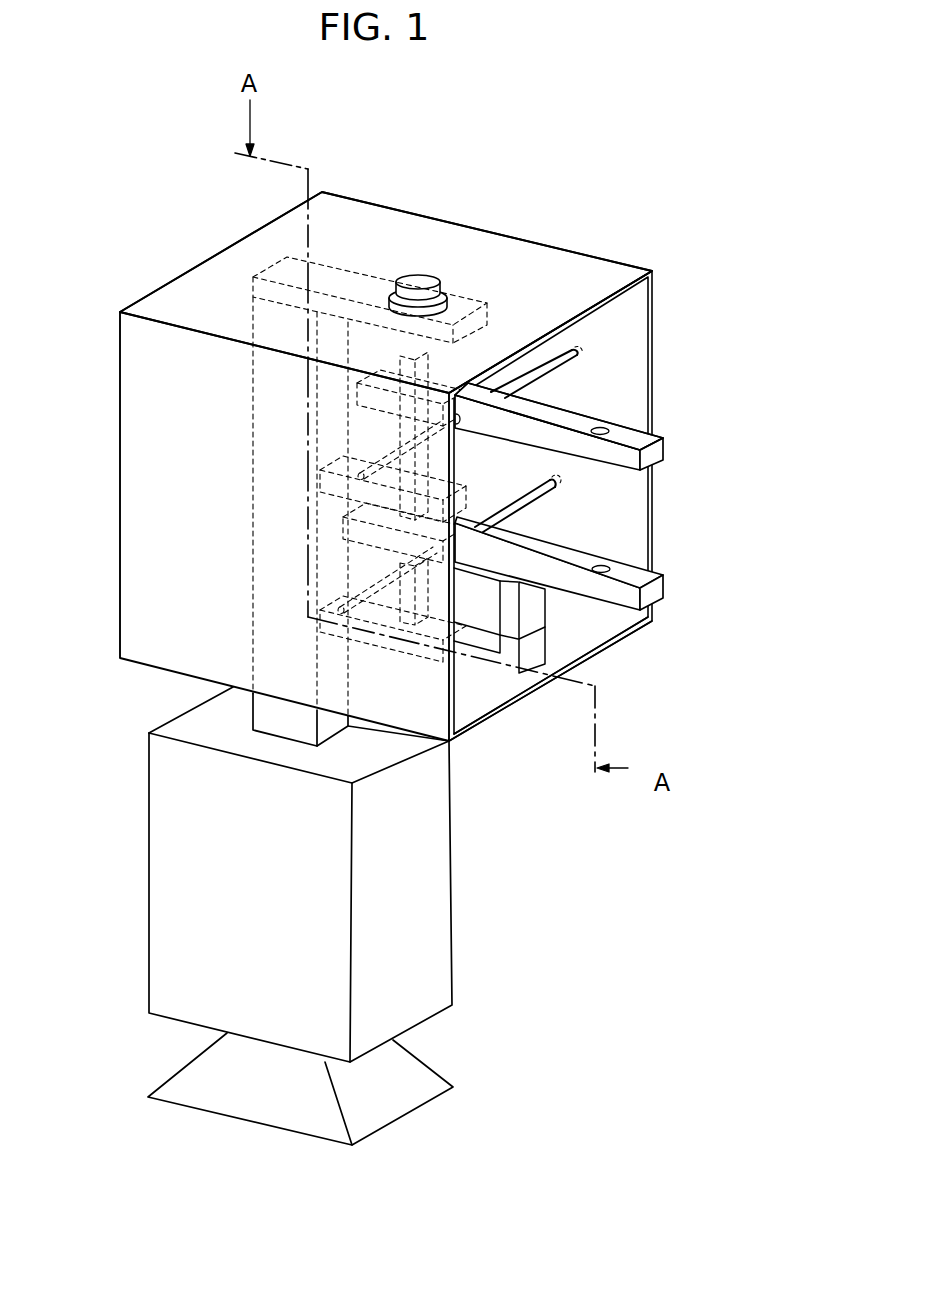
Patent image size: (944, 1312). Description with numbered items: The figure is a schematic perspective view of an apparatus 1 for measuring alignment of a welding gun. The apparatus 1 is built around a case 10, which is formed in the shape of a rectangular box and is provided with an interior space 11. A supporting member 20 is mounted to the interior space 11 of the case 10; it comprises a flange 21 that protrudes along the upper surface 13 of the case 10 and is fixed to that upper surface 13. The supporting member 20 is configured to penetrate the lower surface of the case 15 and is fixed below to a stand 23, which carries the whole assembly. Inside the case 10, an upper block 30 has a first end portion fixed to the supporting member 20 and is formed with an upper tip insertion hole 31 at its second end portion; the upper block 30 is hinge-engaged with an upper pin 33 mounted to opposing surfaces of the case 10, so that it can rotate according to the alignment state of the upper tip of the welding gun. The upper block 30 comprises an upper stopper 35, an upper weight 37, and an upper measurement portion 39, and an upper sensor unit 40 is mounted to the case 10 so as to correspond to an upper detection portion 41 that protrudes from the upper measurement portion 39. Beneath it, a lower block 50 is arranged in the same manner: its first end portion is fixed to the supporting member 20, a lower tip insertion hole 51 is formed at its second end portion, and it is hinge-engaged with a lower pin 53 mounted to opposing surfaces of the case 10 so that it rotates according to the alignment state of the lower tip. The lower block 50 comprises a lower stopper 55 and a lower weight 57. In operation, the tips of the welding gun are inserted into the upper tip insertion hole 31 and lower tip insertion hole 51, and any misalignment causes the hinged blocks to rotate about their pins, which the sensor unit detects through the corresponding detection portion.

The apparatus for measuring alignment of a welding gun 1 is at (172, 244).
The case 10 is at (531, 236).
The interior space 11 is at (614, 362).
The upper surface 13 is at (410, 227).
The lower surface of the case 15 is at (605, 625).
The supporting member 20 is at (268, 710).
The flange 21 is at (330, 277).
The stand 23 is at (435, 948).
The upper block 30 is at (668, 443).
The upper tip insertion hole 31 is at (601, 433).
The upper pin 33 is at (574, 357).
The upper stopper 35 is at (330, 483).
The upper weight 37 is at (403, 428).
The upper measurement portion 39 is at (533, 414).
The upper sensor unit 40 is at (418, 282).
The upper detection portion 41 is at (403, 388).
The lower block 50 is at (668, 581).
The lower tip insertion hole 51 is at (610, 568).
The lower pin 53 is at (564, 484).
The lower stopper 55 is at (505, 669).
The lower weight 57 is at (536, 607).